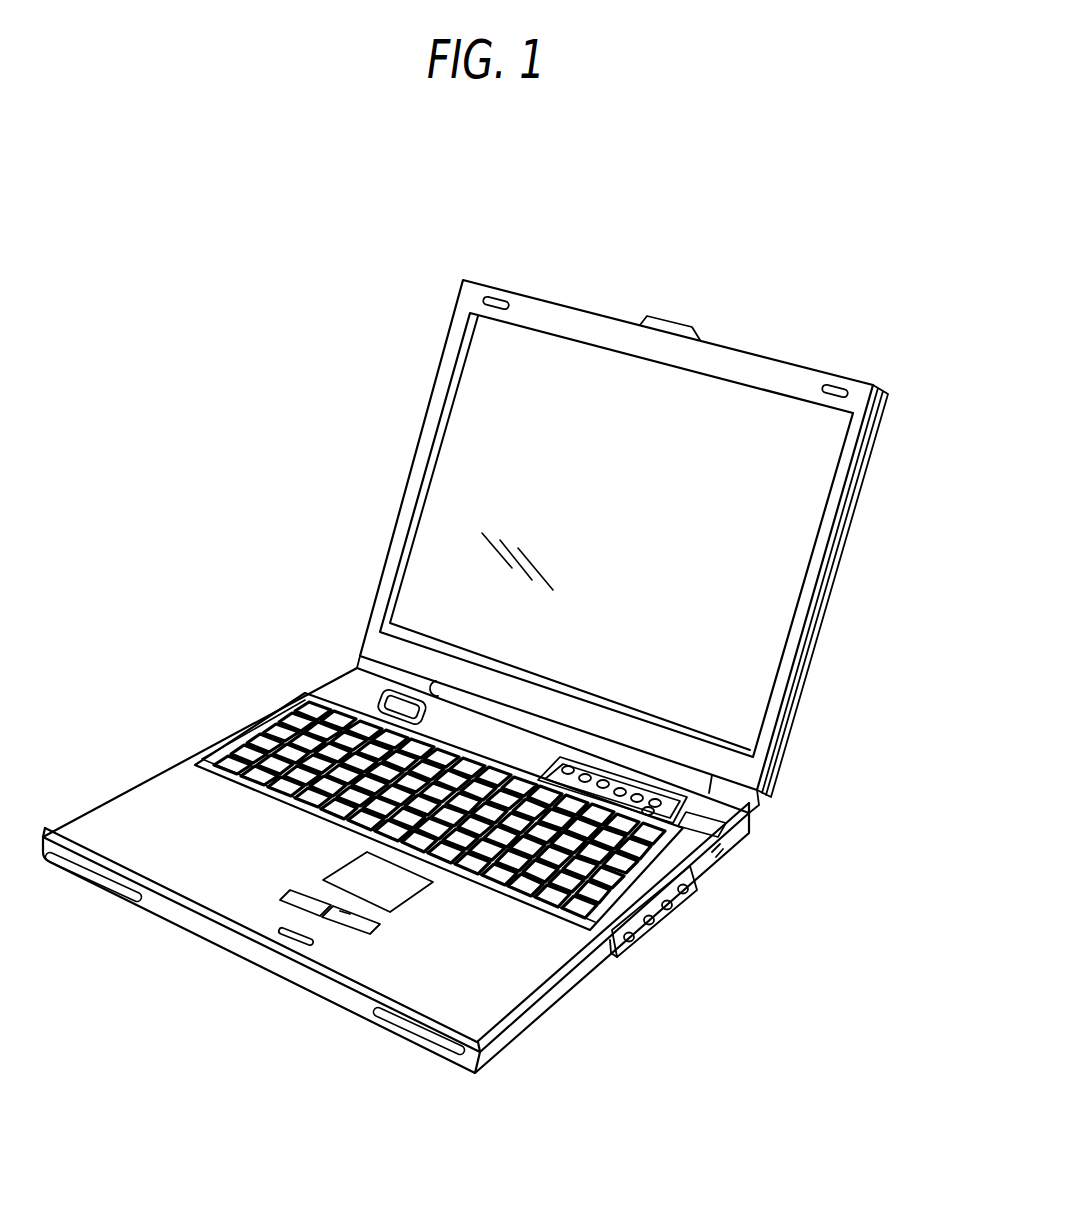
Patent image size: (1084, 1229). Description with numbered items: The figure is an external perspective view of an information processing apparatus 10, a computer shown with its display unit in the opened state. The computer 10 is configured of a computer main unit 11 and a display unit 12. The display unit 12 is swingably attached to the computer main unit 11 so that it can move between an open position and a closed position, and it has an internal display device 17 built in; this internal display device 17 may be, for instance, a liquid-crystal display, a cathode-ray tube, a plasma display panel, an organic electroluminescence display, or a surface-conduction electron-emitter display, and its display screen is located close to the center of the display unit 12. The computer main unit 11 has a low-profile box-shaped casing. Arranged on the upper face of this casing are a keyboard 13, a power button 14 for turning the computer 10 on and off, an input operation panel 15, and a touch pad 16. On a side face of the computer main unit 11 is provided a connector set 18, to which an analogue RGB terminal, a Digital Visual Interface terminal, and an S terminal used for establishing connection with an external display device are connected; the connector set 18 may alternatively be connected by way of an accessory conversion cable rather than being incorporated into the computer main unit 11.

The information processing apparatus 10 is at (350, 426).
The computer main unit 11 is at (520, 1036).
The display unit 12 is at (863, 474).
The keyboard 13 is at (305, 766).
The power button 14 is at (400, 697).
The input operation panel 15 is at (660, 806).
The touch pad 16 is at (356, 878).
The internal display device 17 is at (757, 430).
The connector set 18 is at (678, 905).